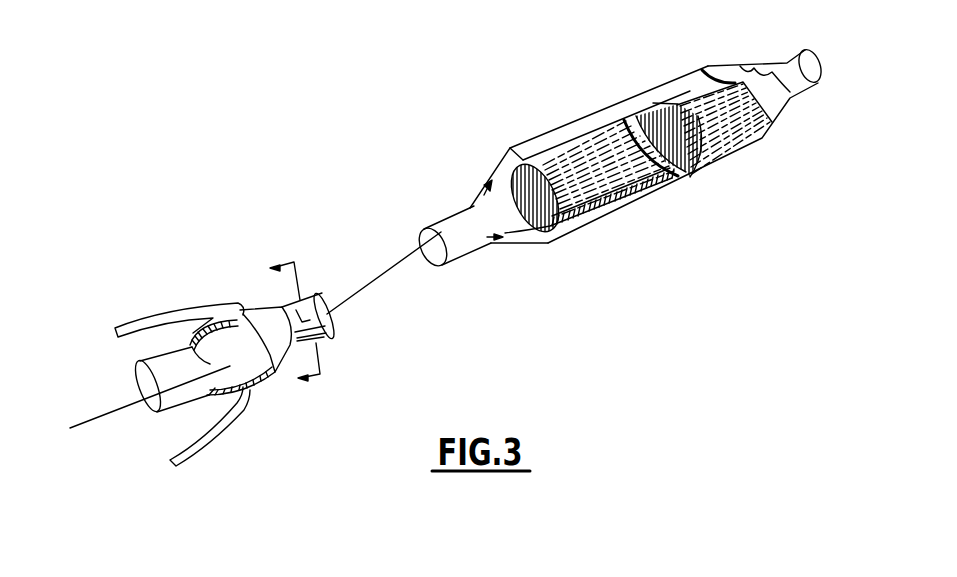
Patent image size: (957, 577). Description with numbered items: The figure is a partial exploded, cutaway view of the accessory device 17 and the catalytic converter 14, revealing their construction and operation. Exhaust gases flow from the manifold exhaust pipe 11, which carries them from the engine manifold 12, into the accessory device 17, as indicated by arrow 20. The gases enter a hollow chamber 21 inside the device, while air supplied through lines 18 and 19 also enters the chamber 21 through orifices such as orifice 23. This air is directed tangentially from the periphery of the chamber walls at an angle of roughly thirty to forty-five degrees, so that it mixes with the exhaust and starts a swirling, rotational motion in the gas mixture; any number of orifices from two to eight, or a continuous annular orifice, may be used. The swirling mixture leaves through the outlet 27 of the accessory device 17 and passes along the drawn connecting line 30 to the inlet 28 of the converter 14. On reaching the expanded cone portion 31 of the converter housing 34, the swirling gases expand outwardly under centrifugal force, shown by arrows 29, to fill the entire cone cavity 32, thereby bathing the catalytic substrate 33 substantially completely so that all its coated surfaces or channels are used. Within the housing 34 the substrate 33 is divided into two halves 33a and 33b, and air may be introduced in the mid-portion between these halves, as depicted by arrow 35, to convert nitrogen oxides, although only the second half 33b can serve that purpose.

The manifold exhaust pipe 11 is at (165, 410).
The manifold 12 is at (268, 388).
The catalytic converter 14 is at (612, 96).
The accessory device 17 is at (258, 409).
The air line 18 is at (168, 308).
The air line 19 is at (210, 448).
The arrow 20 is at (98, 411).
The hollow chamber 21 is at (241, 348).
The orifice 23 is at (223, 321).
The outlet 27 is at (332, 325).
The inlet 28 is at (463, 262).
The arrows 29 is at (467, 203).
The connecting line 30 is at (376, 279).
The expanded cone portion 31 is at (495, 170).
The cone cavity 32 is at (515, 240).
The catalytic substrate 33 is at (641, 197).
The first substrate half 33a is at (620, 220).
The second substrate half 33b is at (747, 138).
The converter housing 34 is at (557, 137).
The arrow 35 is at (687, 183).